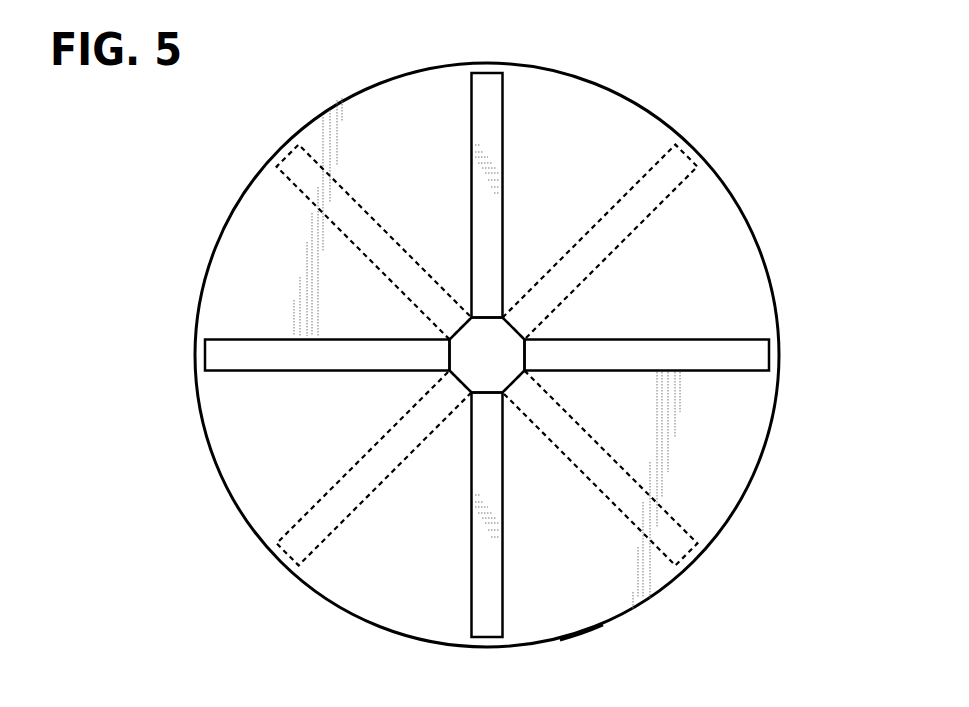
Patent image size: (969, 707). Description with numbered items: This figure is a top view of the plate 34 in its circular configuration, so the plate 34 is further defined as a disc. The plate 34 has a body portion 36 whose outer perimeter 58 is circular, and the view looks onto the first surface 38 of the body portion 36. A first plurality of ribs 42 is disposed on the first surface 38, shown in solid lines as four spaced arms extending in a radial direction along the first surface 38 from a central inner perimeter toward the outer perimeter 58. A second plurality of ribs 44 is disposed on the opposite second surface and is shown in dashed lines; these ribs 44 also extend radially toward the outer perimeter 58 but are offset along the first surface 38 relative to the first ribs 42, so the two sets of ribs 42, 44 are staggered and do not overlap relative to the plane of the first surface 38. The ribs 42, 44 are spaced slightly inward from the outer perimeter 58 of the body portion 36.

The plate 34 is at (546, 54).
The body portion 36 is at (603, 112).
The first surface 38 is at (691, 304).
The first plurality of ribs 42 is at (487, 73).
The second plurality of ribs 44 is at (288, 152).
The outer perimeter 58 is at (603, 625).